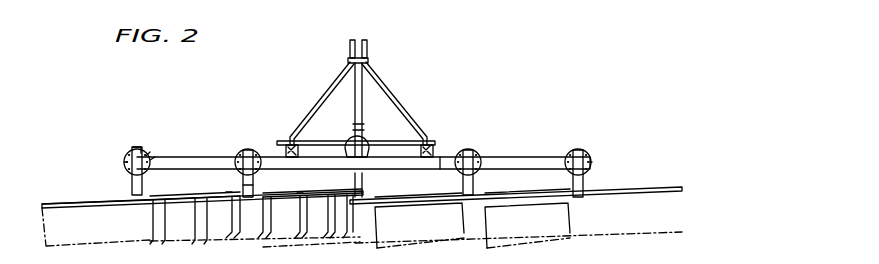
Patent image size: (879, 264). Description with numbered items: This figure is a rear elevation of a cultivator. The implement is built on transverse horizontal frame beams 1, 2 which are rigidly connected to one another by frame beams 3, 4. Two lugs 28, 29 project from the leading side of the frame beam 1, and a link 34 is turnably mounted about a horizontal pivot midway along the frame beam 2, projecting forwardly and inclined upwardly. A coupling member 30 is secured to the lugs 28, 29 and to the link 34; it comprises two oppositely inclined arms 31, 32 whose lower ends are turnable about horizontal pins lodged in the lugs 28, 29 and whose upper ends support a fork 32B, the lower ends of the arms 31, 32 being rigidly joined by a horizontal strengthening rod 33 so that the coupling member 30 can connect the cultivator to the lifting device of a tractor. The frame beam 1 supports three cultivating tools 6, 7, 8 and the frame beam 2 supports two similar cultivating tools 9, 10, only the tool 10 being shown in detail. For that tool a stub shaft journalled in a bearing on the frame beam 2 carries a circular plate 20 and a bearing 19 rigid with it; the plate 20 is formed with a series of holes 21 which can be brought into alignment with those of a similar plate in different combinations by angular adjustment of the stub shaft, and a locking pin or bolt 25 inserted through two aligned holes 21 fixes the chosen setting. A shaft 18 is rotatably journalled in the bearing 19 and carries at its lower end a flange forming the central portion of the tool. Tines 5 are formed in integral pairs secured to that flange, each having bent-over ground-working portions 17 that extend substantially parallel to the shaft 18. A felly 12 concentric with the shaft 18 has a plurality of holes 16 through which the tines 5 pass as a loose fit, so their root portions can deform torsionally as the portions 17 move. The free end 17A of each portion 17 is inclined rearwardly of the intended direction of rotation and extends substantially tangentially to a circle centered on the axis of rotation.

The frame beam 1 is at (533, 157).
The frame beam 2 is at (443, 156).
The frame beam 3 is at (485, 159).
The frame beam 4 is at (238, 173).
The tines 5 is at (195, 228).
The cultivating tool 6 is at (659, 185).
The cultivating tool 7 is at (314, 249).
The cultivating tool 8 is at (67, 193).
The cultivating tool 9 is at (436, 249).
The cultivating tool 10 is at (226, 196).
The felly 12 is at (158, 200).
The holes 16 is at (298, 194).
The ground-working portions 17 is at (200, 238).
The free end 17A is at (203, 238).
The shaft 18 is at (134, 150).
The bearing 19 is at (132, 183).
The circular plate 20 is at (146, 150).
The holes 21 is at (151, 154).
The locking pin or bolt 25 is at (124, 162).
The lug 28 is at (286, 150).
The lug 29 is at (430, 171).
The coupling member 30 is at (356, 115).
The arm 31 is at (397, 100).
The arm 32 is at (317, 104).
The fork 32B is at (368, 46).
The strengthening rod 33 is at (328, 141).
The link 34 is at (361, 128).